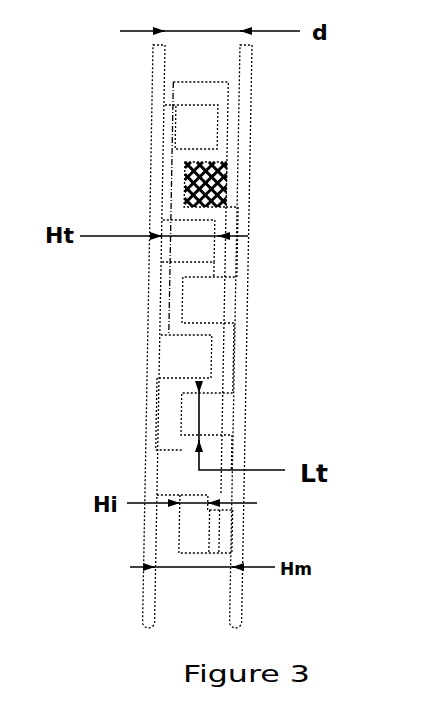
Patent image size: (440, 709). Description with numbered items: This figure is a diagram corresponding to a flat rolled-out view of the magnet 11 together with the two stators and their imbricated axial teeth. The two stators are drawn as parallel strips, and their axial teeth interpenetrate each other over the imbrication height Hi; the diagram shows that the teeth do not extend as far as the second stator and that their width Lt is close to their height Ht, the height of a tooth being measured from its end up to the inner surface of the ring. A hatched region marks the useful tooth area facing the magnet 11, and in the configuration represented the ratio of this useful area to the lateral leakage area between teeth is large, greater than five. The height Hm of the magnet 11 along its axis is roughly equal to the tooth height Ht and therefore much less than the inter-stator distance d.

The magnet 11 is at (187, 577).